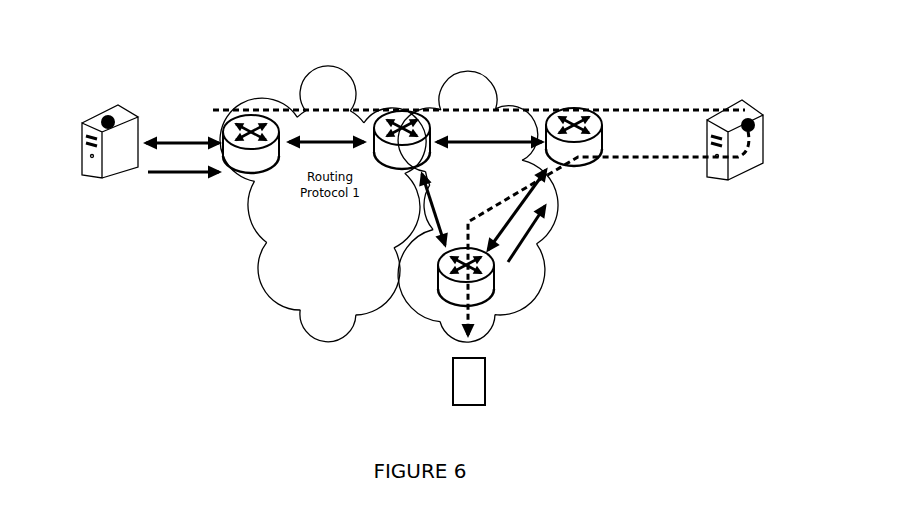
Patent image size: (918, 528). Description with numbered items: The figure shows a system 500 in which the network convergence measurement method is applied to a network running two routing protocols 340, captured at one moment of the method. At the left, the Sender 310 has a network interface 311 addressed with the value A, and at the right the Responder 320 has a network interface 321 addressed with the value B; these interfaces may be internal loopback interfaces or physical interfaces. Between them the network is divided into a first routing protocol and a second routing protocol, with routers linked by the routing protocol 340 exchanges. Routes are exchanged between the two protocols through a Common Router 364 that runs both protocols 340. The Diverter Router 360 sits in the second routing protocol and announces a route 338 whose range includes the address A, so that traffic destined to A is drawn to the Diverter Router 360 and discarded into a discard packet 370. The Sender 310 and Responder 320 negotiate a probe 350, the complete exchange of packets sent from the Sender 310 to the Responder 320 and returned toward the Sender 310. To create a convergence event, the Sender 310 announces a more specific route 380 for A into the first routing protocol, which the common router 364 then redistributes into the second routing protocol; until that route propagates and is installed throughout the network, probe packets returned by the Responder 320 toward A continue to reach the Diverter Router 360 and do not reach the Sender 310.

The system 500 is at (85, 55).
The Sender 310 is at (78, 157).
The network interface 311 is at (91, 118).
The Responder 320 is at (766, 152).
The network interface 321 is at (755, 118).
The route R_A' 338 is at (537, 242).
The routing protocol 340 is at (346, 198).
The probe 350 is at (481, 219).
The Diverter Router 360 is at (432, 291).
The Common Router 364 is at (402, 140).
The discard packet 370 is at (452, 390).
The route R_A 380 is at (183, 172).